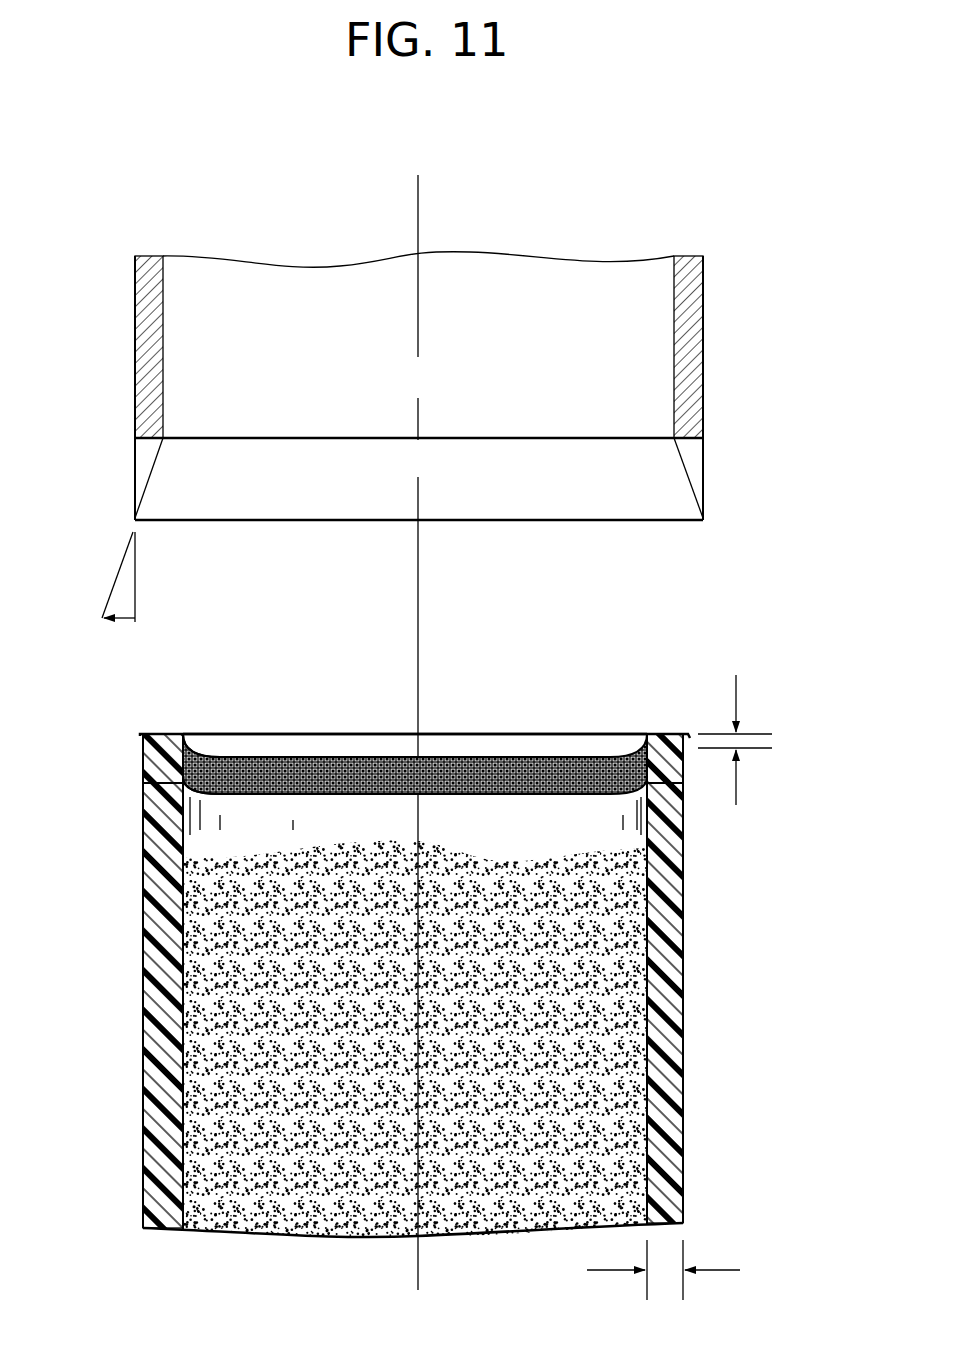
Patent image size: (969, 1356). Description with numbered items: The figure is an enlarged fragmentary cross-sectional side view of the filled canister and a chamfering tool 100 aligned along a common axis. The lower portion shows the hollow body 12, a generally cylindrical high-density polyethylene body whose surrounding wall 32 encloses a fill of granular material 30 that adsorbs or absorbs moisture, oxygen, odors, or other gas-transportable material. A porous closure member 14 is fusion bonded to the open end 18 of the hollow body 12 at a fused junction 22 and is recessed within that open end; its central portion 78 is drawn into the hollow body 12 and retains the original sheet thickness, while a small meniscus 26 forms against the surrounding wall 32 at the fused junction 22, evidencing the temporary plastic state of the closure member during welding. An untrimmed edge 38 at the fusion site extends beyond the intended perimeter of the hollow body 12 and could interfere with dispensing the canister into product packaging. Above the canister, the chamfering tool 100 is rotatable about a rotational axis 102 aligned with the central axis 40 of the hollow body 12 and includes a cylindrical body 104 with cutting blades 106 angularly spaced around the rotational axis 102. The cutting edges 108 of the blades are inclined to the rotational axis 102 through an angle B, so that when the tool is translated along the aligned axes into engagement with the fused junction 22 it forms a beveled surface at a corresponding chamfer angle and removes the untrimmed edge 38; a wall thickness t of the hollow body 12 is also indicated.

The chamfering tool 100 is at (439, 413).
The rotational axis 102 is at (418, 232).
The cylindrical body 104 is at (155, 287).
The cutting blades 106 is at (143, 464).
The cutting edges 108 is at (150, 488).
The central axis 40 is at (420, 588).
The hollow body 12 is at (439, 931).
The porous closure member 14 is at (525, 788).
The open end 18 is at (548, 733).
The fused junction 22 is at (150, 762).
The meniscus 26 is at (186, 745).
The granular material 30 is at (295, 860).
The surrounding wall 32 is at (143, 1000).
The untrimmed edge 38 is at (140, 736).
The central portion 78 is at (340, 786).
The angle β B is at (130, 619).
The wall thickness t is at (712, 1270).